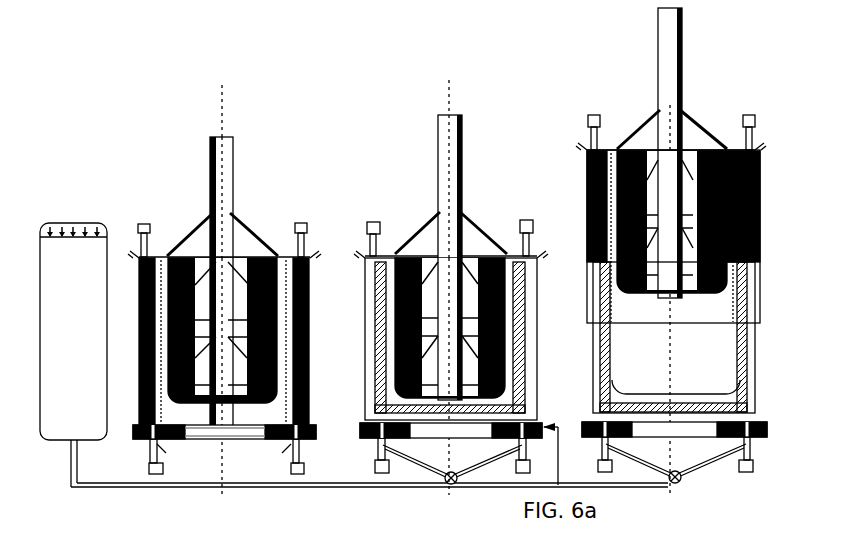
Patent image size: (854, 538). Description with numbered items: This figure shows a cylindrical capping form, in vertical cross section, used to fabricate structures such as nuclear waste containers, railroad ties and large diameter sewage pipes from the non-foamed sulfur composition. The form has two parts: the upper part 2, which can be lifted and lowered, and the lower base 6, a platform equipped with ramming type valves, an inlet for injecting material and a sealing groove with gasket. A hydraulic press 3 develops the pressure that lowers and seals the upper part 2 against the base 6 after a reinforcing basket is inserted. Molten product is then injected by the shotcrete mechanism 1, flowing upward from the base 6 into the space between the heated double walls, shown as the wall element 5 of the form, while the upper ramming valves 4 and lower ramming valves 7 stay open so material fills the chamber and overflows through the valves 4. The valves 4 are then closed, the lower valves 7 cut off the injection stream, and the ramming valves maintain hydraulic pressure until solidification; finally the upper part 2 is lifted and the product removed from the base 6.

The shotcrete mechanism 1 is at (70, 424).
The upper part of capping form 2 is at (224, 357).
The hydraulic press 3 is at (229, 142).
The upper ramming valves 4 is at (368, 214).
The outer mould container 5 is at (364, 381).
The base 6 is at (251, 441).
The lower ramming valves 7 is at (377, 452).